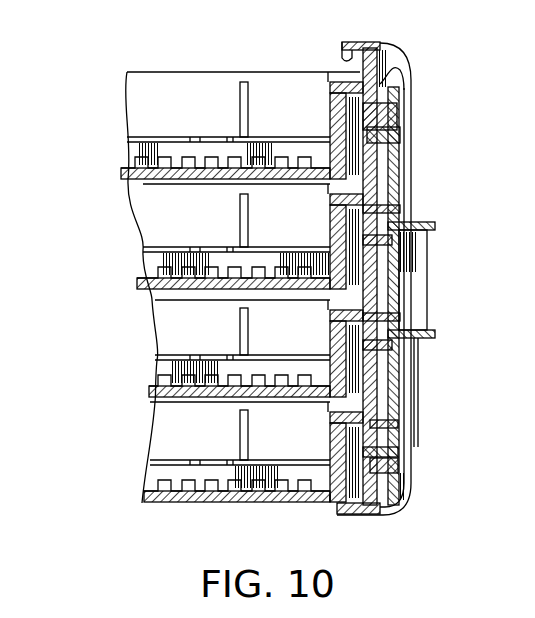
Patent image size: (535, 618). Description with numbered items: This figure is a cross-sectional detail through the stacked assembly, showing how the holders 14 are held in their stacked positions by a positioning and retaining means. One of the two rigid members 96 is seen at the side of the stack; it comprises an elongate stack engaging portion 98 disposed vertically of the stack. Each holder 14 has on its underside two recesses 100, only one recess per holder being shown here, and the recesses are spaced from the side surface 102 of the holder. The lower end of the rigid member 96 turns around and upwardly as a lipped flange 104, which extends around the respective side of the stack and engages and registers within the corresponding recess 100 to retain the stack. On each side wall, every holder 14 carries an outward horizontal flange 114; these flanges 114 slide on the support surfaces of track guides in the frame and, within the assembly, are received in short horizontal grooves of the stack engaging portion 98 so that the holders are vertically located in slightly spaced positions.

The holder 14 is at (178, 60).
The rigid member 96 is at (440, 250).
The stack engaging portion 98 is at (405, 113).
The recess 100 is at (348, 166).
The side surface 102 is at (414, 406).
The lipped flange 104 is at (330, 494).
The outward horizontal flange 114 is at (403, 78).